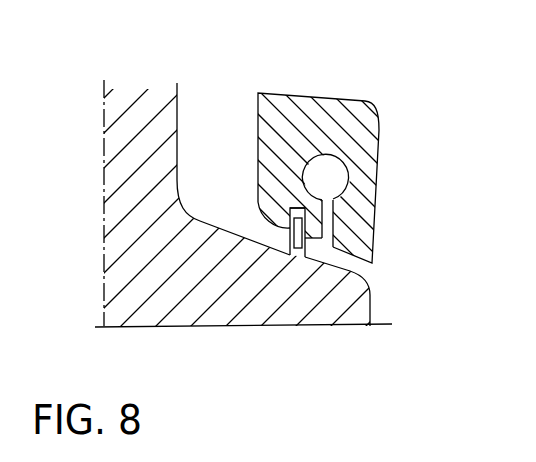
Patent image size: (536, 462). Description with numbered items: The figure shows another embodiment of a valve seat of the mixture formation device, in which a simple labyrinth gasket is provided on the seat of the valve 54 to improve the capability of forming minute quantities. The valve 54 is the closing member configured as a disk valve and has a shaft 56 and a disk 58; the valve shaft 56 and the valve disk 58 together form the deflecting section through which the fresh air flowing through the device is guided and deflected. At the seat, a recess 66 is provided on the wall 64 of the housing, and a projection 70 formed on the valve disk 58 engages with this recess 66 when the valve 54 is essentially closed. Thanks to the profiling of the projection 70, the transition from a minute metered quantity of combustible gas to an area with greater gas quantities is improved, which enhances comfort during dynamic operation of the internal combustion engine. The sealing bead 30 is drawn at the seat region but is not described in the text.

The valve 54 is at (151, 114).
The shaft 56 is at (176, 140).
The disk 58 is at (320, 260).
The wall 64 is at (353, 255).
The recess 66 is at (295, 210).
The projection 70 is at (295, 245).
The sealing bead / bulb groove 30 is at (327, 217).